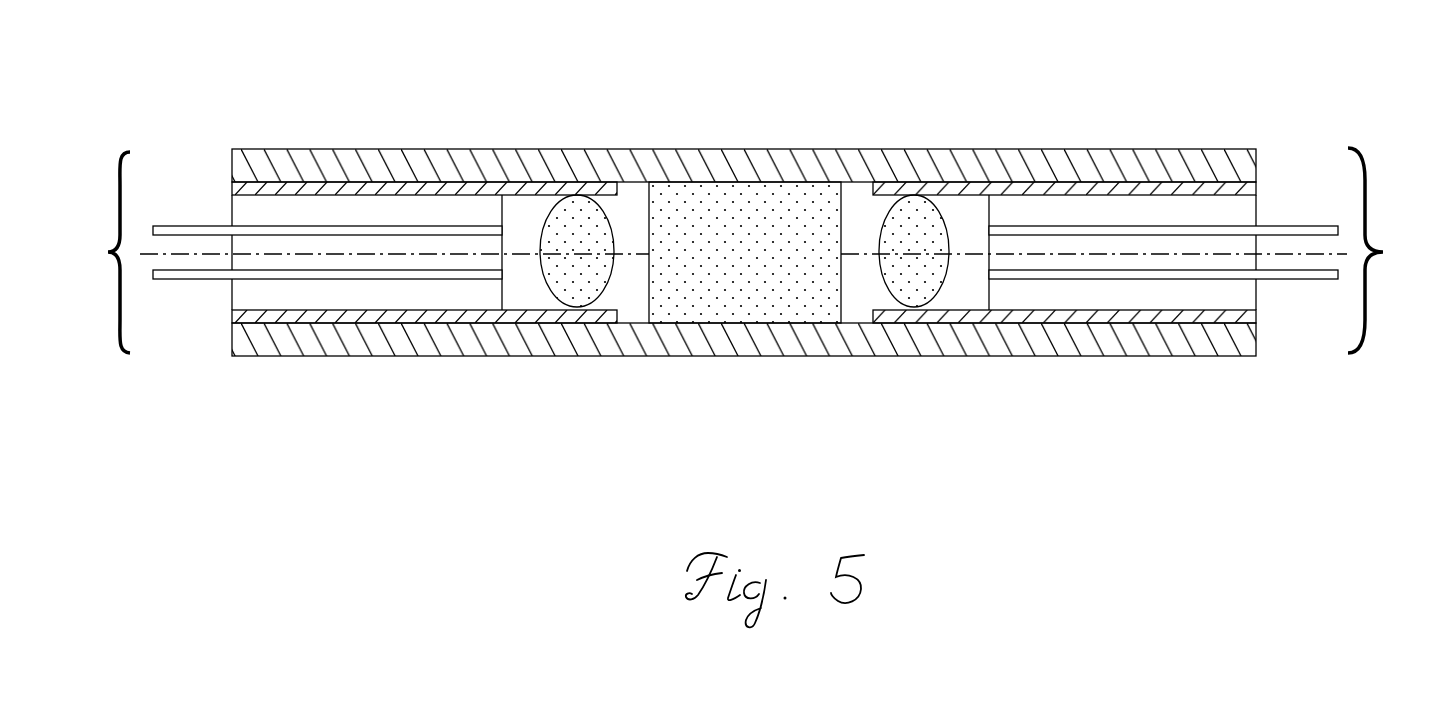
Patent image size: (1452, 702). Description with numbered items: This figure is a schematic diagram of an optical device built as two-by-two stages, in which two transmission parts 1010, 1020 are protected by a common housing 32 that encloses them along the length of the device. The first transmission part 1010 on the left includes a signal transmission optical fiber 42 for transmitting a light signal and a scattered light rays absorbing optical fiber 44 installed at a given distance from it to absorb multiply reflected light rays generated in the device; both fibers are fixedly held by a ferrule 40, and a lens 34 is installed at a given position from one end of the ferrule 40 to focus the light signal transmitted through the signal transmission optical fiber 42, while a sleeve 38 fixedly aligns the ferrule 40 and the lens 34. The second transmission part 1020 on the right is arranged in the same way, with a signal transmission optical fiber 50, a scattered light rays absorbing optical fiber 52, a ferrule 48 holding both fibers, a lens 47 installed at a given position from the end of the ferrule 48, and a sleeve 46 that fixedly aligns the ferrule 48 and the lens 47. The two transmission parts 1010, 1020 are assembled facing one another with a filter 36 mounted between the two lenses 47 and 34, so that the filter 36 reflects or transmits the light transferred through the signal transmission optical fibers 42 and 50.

The housing 32 is at (484, 157).
The lens 34 is at (573, 208).
The filter 36 is at (745, 190).
The sleeve 38 is at (296, 188).
The ferrule 40 is at (360, 205).
The signal transmission optical fiber 42 is at (194, 227).
The scattered light rays absorbing optical fiber 44 is at (193, 279).
The sleeve 46 is at (1195, 190).
The lens 47 is at (917, 210).
The ferrule 48 is at (1130, 205).
The signal transmission optical fiber 50 is at (1294, 227).
The scattered light rays absorbing optical fiber 52 is at (1294, 279).
The transmission part 1010 is at (108, 252).
The transmission part 1020 is at (1383, 252).